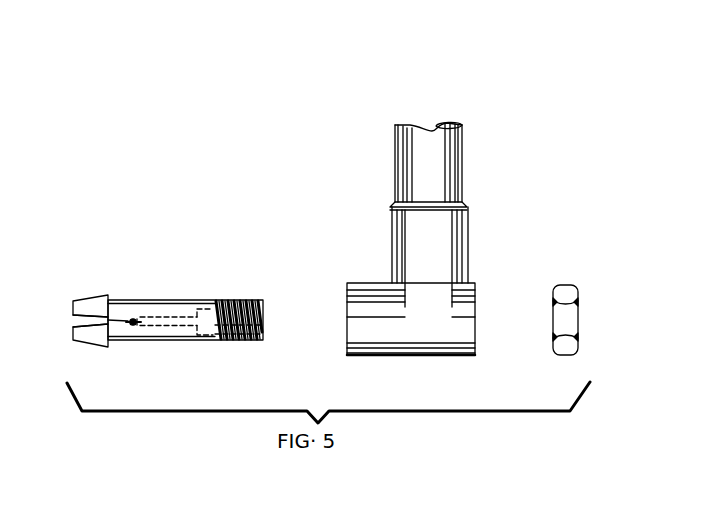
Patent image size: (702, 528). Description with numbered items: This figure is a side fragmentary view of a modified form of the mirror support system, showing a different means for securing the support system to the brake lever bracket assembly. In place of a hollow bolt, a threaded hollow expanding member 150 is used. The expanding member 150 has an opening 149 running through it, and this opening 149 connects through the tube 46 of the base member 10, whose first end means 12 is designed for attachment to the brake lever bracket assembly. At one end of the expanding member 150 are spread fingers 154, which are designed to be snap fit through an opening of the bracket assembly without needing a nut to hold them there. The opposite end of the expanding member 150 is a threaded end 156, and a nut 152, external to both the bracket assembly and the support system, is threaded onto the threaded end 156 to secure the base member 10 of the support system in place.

The base member 10 is at (452, 163).
The first end means 12 is at (430, 263).
The tube 46 is at (365, 356).
The opening 149 is at (205, 339).
The threaded hollow expanding member 150 is at (177, 304).
The nut 152 is at (565, 291).
The spread fingers 154 is at (110, 295).
The threaded end 156 is at (252, 339).